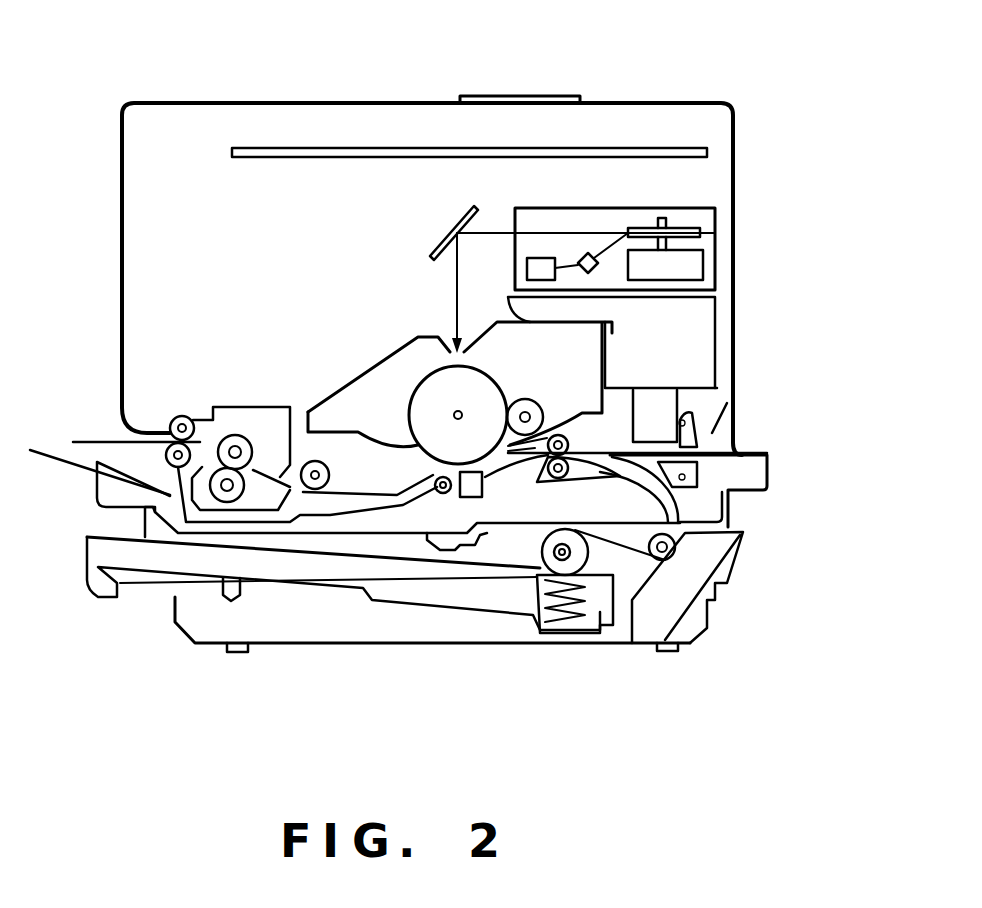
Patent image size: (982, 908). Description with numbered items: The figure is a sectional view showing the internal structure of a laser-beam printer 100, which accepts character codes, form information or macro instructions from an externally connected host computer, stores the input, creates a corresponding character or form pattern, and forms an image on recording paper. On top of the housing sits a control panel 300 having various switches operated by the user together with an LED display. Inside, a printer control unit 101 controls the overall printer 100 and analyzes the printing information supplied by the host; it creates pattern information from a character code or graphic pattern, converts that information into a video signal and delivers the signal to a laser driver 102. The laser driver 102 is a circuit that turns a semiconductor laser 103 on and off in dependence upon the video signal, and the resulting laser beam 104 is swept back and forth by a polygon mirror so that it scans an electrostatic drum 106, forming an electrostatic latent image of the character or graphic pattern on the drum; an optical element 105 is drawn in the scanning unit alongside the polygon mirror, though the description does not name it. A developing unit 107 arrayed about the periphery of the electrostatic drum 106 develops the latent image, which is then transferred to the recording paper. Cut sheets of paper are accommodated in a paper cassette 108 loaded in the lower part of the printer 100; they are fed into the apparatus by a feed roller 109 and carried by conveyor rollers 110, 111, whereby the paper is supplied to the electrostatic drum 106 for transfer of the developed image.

The laser-beam printer 100 is at (672, 103).
The control panel 300 is at (520, 100).
The printer control unit 101 is at (707, 152).
The laser driver 102 is at (527, 268).
The semiconductor laser 103 is at (598, 272).
The laser beam 104 is at (603, 233).
The lens 105 is at (700, 232).
The electrostatic drum 106 is at (427, 388).
The developing unit 107 is at (357, 403).
The paper cassette 108 is at (85, 557).
The feed roller 109 is at (553, 555).
The conveyor roller 110 is at (668, 553).
The conveyor roller 111 is at (553, 480).